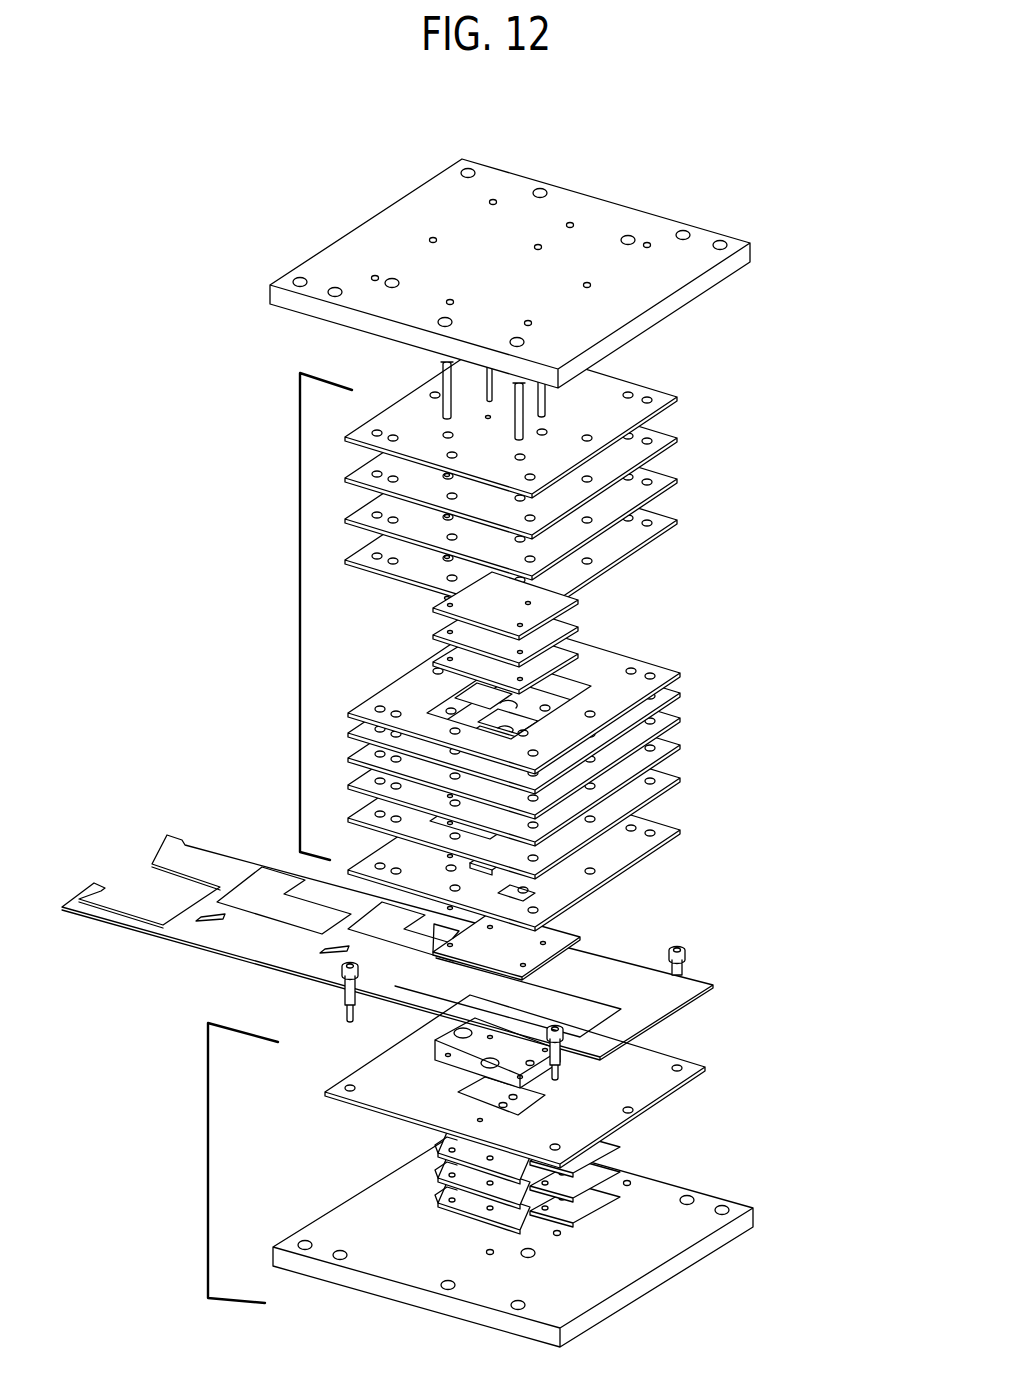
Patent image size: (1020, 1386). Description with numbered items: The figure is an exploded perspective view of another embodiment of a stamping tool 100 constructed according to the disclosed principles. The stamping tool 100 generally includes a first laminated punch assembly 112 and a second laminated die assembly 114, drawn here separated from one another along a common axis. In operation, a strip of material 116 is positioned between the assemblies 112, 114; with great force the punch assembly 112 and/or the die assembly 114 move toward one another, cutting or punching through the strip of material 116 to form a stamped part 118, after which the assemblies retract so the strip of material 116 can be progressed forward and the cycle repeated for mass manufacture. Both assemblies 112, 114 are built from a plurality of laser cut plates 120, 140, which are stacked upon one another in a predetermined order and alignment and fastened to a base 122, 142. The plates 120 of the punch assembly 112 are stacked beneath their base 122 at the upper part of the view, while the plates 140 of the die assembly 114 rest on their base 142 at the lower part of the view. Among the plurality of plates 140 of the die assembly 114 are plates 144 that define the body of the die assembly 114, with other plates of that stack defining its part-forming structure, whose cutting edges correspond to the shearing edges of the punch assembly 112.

The stamping tool 100 is at (205, 385).
The first laminated punch assembly 112 is at (300, 672).
The second laminated die assembly 114 is at (208, 1152).
The strip of material 116 is at (648, 997).
The stamped part 118 is at (560, 940).
The laser cut plates 120 is at (690, 422).
The base 122 is at (400, 222).
The laser cut plates 140 is at (460, 1067).
The base 142 is at (405, 1295).
The plates 144 is at (535, 1165).